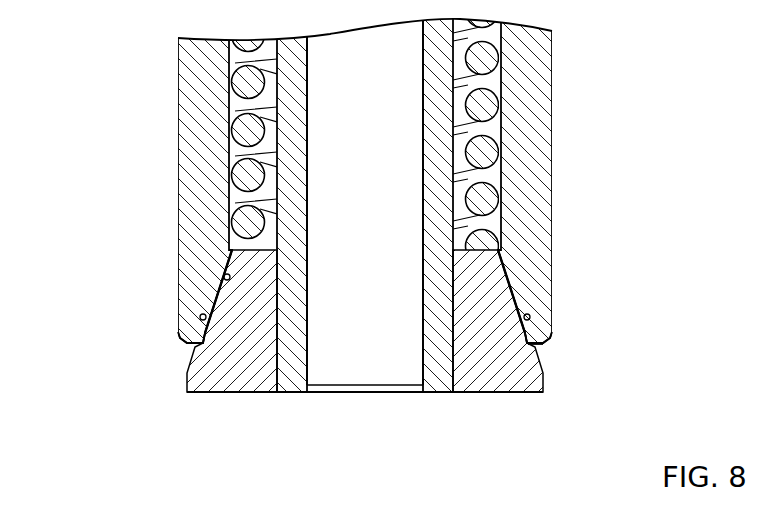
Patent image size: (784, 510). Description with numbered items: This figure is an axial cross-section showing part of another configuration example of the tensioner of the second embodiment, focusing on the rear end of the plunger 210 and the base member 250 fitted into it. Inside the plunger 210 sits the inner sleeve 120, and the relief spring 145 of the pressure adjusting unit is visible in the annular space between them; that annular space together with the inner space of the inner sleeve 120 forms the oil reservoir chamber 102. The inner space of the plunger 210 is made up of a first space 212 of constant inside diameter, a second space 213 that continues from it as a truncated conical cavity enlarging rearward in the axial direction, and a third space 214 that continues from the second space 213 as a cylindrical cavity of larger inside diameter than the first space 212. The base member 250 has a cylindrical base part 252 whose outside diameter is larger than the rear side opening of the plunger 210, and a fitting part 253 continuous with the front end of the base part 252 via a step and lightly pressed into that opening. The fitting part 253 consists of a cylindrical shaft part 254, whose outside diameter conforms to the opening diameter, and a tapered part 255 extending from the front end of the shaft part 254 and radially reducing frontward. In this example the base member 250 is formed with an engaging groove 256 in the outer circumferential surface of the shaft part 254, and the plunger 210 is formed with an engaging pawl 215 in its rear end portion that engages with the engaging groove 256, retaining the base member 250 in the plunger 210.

The plunger 210 is at (174, 73).
The inner sleeve 120 is at (178, 118).
The first space 212 is at (265, 142).
The second space 213 is at (227, 277).
The third space 214 is at (203, 317).
The engaging pawl 215 is at (205, 344).
The base member 250 is at (182, 392).
The oil reservoir chamber 102 is at (390, 98).
The relief spring 145 is at (492, 148).
The tapered part 255 is at (498, 277).
The fitting part 253 is at (683, 236).
The shaft part 254 is at (526, 326).
The base part 252 is at (545, 385).
The engaging groove 256 is at (528, 344).